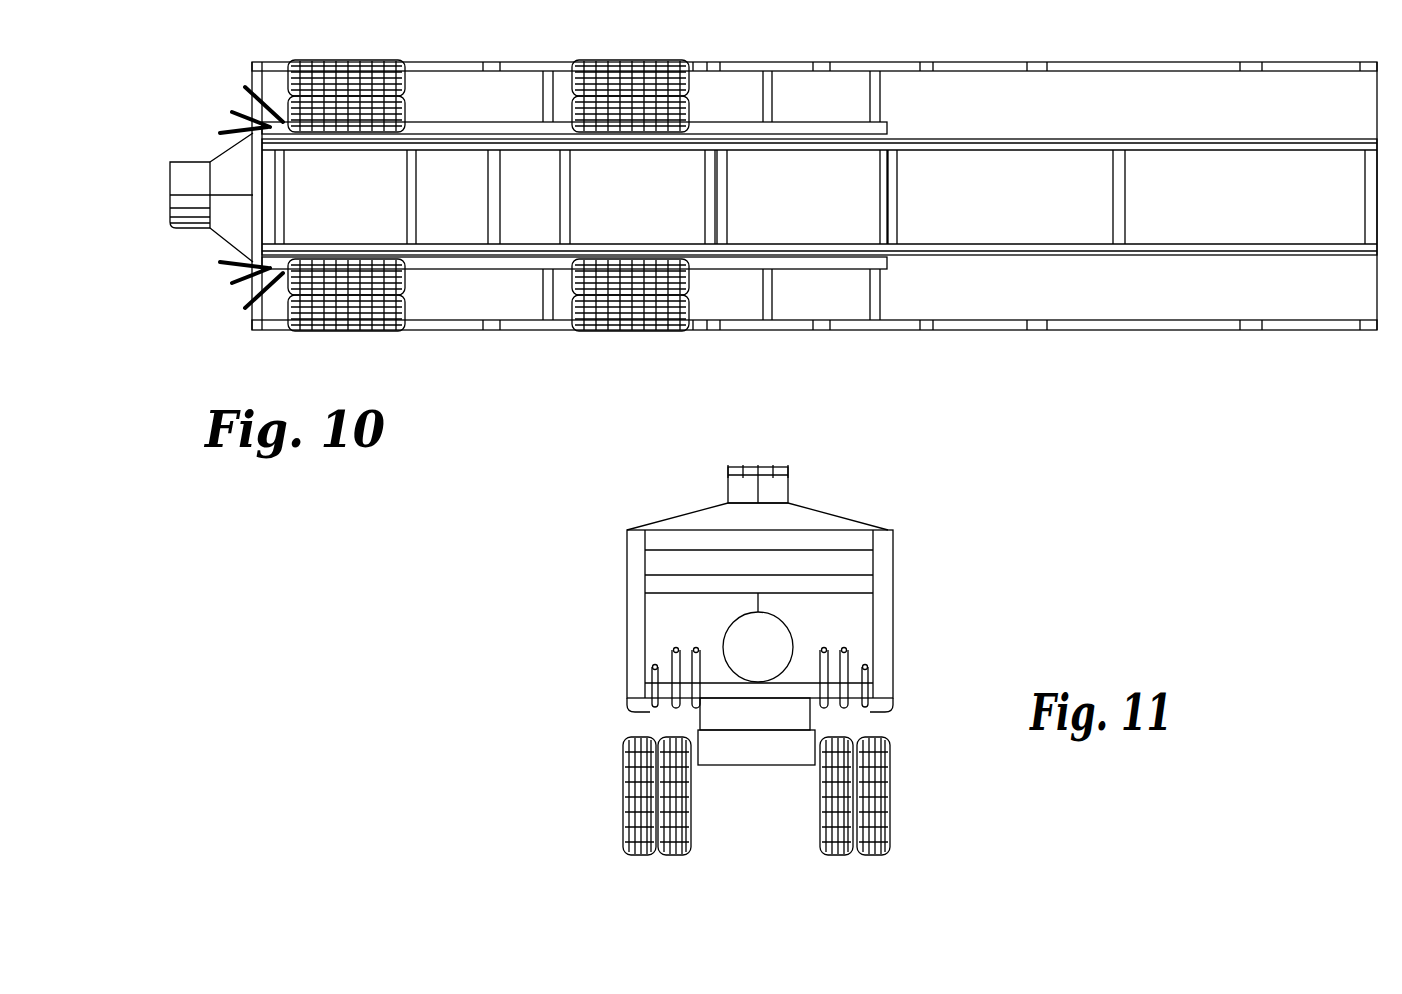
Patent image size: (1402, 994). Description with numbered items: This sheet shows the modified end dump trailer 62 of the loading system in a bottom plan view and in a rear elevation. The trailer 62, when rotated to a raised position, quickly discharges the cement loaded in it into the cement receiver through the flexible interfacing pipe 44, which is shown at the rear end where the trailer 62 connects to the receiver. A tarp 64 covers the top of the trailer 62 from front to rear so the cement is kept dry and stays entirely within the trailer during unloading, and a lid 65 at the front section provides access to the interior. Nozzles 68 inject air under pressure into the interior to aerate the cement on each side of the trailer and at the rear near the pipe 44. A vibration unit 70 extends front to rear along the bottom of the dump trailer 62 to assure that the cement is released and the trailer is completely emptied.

In FIG. 10, the flexible interfacing pipe 44 is at (181, 162).
In FIG. 11, the flexible interfacing pipe 44 is at (730, 630).
In FIG. 10, the dump trailer 62 is at (905, 47).
In FIG. 11, the dump trailer 62 is at (912, 606).
In FIG. 11, the tarp 64 is at (676, 517).
In FIG. 11, the lid 65 is at (788, 493).
In FIG. 10, the nozzles 68 is at (245, 112).
In FIG. 11, the nozzles 68 is at (667, 713).
In FIG. 10, the vibration unit 70 is at (1046, 211).